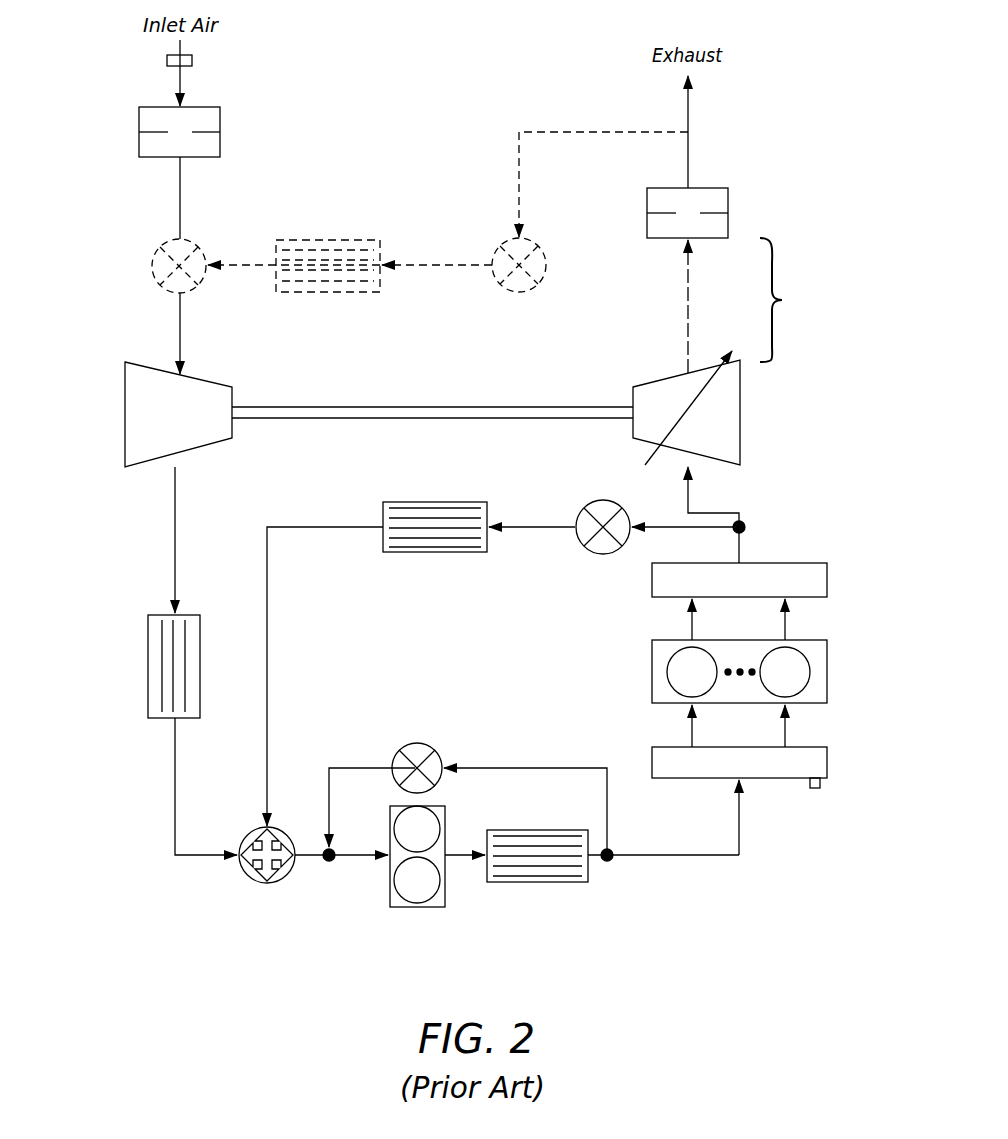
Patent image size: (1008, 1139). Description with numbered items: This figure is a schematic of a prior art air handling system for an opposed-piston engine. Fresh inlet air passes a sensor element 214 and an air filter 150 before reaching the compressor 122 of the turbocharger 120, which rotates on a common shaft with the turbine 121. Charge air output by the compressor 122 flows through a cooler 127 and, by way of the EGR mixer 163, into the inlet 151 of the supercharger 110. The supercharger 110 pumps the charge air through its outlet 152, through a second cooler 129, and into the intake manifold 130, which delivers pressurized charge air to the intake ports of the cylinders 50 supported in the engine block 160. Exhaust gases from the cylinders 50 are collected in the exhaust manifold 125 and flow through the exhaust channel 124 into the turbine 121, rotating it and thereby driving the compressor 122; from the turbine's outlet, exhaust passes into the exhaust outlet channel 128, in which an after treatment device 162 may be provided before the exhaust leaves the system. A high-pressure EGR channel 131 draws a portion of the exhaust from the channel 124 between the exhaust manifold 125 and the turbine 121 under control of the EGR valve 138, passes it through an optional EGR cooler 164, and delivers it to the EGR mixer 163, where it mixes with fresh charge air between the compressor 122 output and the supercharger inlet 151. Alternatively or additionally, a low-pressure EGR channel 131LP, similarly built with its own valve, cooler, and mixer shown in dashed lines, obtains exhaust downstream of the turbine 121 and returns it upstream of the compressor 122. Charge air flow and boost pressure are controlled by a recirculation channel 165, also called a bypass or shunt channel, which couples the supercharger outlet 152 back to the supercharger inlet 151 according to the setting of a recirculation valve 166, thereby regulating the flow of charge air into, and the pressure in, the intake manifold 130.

The inlet air sensor 214 is at (192, 62).
The air filter 150 is at (220, 118).
The EGR mixer 163 is at (150, 262).
The EGR cooler 164 is at (330, 240).
The EGR valve 138 is at (519, 292).
The low-pressure EGR channel 131LP is at (440, 180).
The after treatment device 162 is at (728, 218).
The exhaust outlet channel 128 is at (800, 300).
The turbocharger 120 is at (417, 377).
The compressor 122 is at (140, 467).
The turbine 121 is at (740, 432).
The exhaust channel 124 is at (690, 497).
The EGR channel 131 is at (518, 492).
The exhaust manifold 125 is at (827, 575).
The engine block 160 is at (753, 651).
The cylinder 50 is at (667, 672).
The intake manifold 130 is at (827, 765).
The cooler 127 is at (148, 668).
The supercharger inlet 151 is at (333, 862).
The recirculation valve 166 is at (404, 745).
The recirculation channel 165 is at (493, 748).
The supercharger 110 is at (417, 907).
The supercharger outlet 152 is at (452, 858).
The second cooler 129 is at (565, 882).